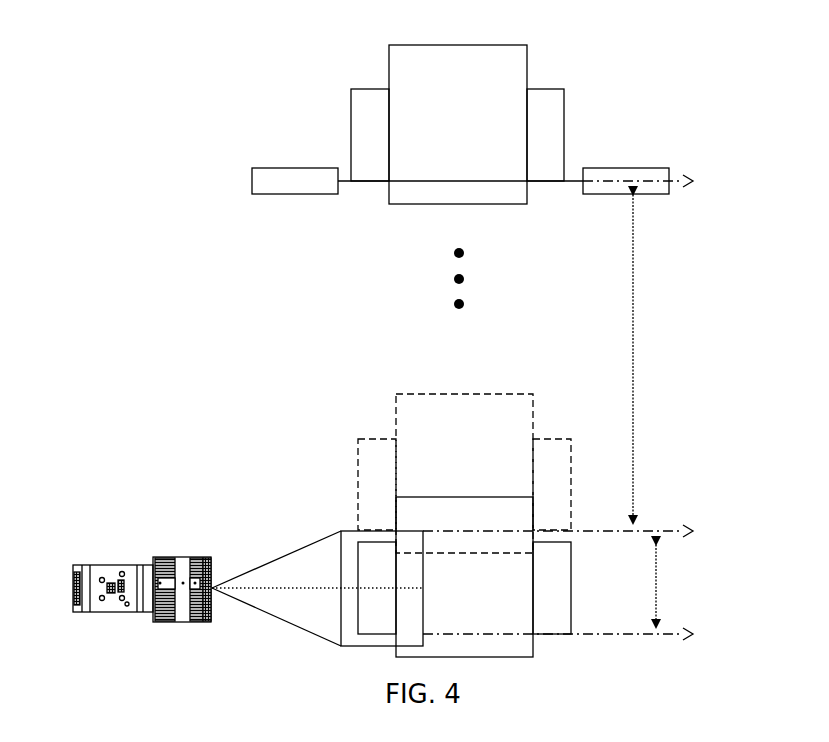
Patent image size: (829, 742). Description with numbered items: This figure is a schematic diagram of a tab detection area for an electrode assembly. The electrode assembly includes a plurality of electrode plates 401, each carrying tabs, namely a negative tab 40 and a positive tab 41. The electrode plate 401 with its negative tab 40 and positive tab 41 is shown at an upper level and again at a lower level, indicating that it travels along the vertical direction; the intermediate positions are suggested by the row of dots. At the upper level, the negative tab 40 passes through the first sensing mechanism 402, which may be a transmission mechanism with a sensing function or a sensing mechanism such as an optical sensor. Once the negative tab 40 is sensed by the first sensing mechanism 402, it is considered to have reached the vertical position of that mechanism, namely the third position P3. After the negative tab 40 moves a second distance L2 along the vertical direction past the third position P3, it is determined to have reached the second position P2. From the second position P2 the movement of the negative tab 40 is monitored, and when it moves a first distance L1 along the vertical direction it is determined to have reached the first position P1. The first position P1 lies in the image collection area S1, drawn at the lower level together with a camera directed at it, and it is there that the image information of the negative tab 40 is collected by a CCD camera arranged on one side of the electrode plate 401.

The negative tab 40 is at (375, 116).
The electrode plate 401 is at (505, 77).
The positive tab 41 is at (546, 112).
The first sensing mechanism 402 is at (283, 181).
The image collection area S1 is at (358, 528).
The first position P1 is at (579, 636).
The second position P2 is at (575, 533).
The third position P3 is at (666, 181).
The first distance L1 is at (673, 582).
The second distance L2 is at (651, 355).